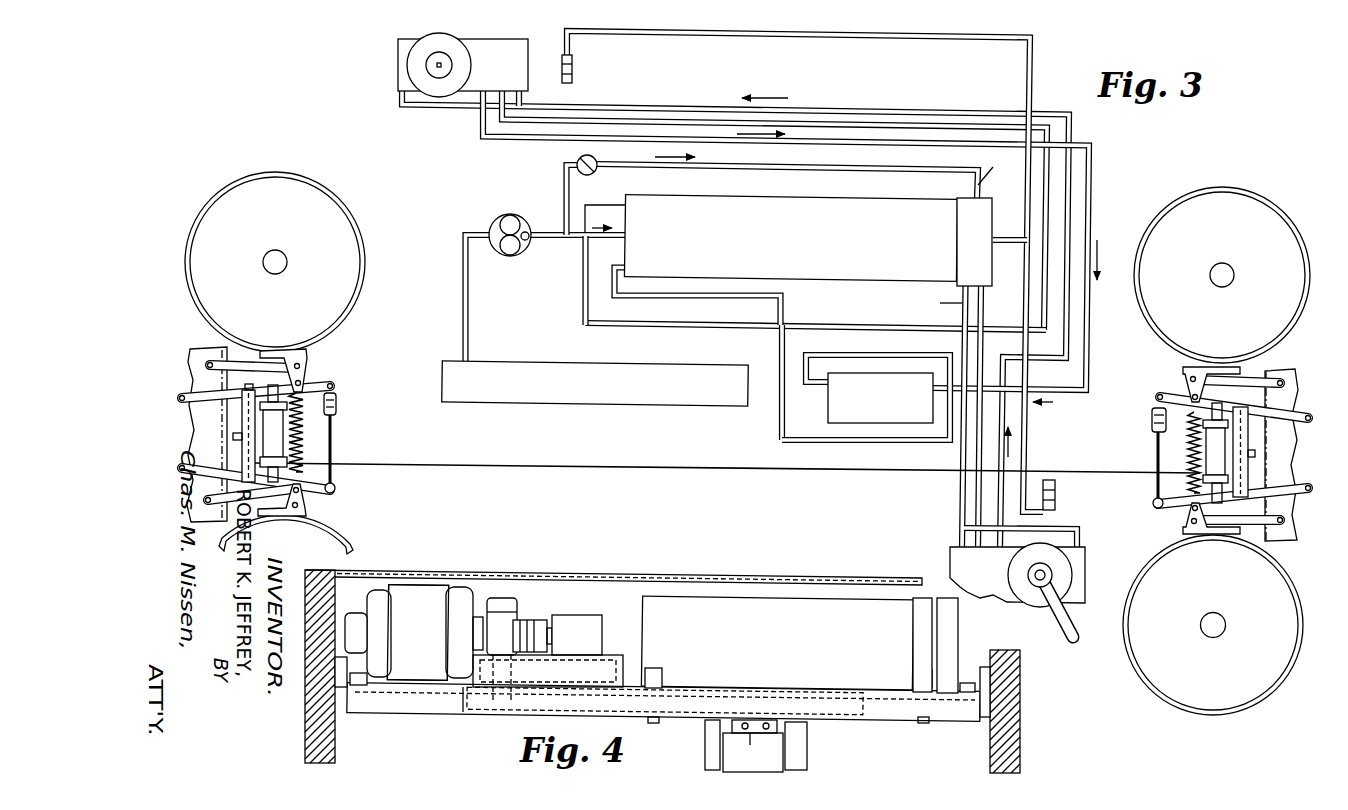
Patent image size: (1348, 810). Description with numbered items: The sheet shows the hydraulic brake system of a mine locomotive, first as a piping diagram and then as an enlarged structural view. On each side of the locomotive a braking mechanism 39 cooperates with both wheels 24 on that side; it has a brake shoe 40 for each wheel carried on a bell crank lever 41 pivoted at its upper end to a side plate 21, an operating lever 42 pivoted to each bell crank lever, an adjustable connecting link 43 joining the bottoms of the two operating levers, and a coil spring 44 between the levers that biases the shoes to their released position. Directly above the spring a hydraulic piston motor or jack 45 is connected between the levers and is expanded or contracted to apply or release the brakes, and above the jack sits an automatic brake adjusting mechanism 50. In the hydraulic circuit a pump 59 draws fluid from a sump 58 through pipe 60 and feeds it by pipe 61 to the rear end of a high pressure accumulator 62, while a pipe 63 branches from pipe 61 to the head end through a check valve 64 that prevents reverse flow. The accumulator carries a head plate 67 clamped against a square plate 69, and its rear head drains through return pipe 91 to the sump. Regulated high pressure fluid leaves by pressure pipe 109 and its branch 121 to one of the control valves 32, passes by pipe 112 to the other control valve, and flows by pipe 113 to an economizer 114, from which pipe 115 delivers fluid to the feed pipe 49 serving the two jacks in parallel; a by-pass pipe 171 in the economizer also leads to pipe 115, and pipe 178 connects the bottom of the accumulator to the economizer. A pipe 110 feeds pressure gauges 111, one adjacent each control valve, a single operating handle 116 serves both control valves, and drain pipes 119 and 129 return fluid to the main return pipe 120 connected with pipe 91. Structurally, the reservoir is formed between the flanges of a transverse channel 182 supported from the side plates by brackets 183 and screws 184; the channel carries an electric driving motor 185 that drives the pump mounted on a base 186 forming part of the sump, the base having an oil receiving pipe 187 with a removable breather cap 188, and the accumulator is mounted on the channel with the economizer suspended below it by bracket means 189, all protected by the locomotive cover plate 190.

In FIG. 3, the side plate 21 is at (742, 444).
In FIG. 4, the side plate 21 is at (313, 647).
In FIG. 3, the wheels 24 is at (262, 558).
In FIG. 3, the control valves 32 is at (392, 38).
In FIG. 3, the braking mechanism 39 is at (343, 422).
In FIG. 3, the brake shoes 40 is at (330, 340).
In FIG. 3, the bell crank lever 41 is at (247, 366).
In FIG. 3, the operating lever 42 is at (210, 393).
In FIG. 3, the adjustable connecting link 43 is at (334, 443).
In FIG. 3, the coil spring 44 is at (300, 446).
In FIG. 3, the hydraulic piston motor or jack 45 is at (276, 435).
In FIG. 3, the feed pipe 49 is at (490, 463).
In FIG. 3, the automatic brake adjusting mechanism 50 is at (238, 417).
In FIG. 3, the sump 58 is at (695, 378).
In FIG. 4, the sump 58 is at (690, 703).
In FIG. 3, the pump 59 is at (508, 214).
In FIG. 4, the pump 59 is at (585, 620).
In FIG. 3, the pipe 60 is at (468, 305).
In FIG. 3, the pipe 61 is at (607, 240).
In FIG. 3, the high pressure hydraulic fluid accumulator 62 is at (888, 220).
In FIG. 4, the high pressure hydraulic fluid accumulator 62 is at (838, 618).
In FIG. 3, the pipe 63 is at (767, 168).
In FIG. 3, the check valve 64 is at (577, 160).
In FIG. 4, the head plate 67 is at (957, 642).
In FIG. 4, the square plate 69 is at (918, 653).
In FIG. 3, the return or drain pipe 91 is at (606, 207).
In FIG. 3, the pressure pipe 109 is at (963, 422).
In FIG. 3, the pipe 110 is at (1003, 237).
In FIG. 3, the pressure gauges 111 is at (576, 62).
In FIG. 3, the pipe 112 is at (458, 105).
In FIG. 3, the pipe 113 is at (868, 145).
In FIG. 3, the economizer 114 is at (893, 425).
In FIG. 4, the economizer 114 is at (812, 762).
In FIG. 3, the pipe 115 is at (802, 413).
In FIG. 3, the operating handle 116 is at (1077, 637).
In FIG. 3, the drain pipe 119 is at (985, 315).
In FIG. 3, the main return or drain pipe 120 is at (683, 325).
In FIG. 3, the branch 121 is at (1070, 528).
In FIG. 3, the drain pipe 129 is at (870, 125).
In FIG. 3, the by-pass pipe 171 is at (882, 355).
In FIG. 3, the pipe 178 is at (787, 305).
In FIG. 4, the transverse channel 182 is at (447, 700).
In FIG. 4, the brackets 183 is at (340, 695).
In FIG. 4, the screws 184 is at (367, 676).
In FIG. 4, the electric driving motor 185 is at (414, 633).
In FIG. 4, the base 186 is at (548, 671).
In FIG. 4, the oil receiving pipe 187 is at (522, 625).
In FIG. 4, the removable breather cap 188 is at (505, 600).
In FIG. 4, the bracket means 189 is at (754, 743).
In FIG. 4, the cover plate 190 is at (725, 575).